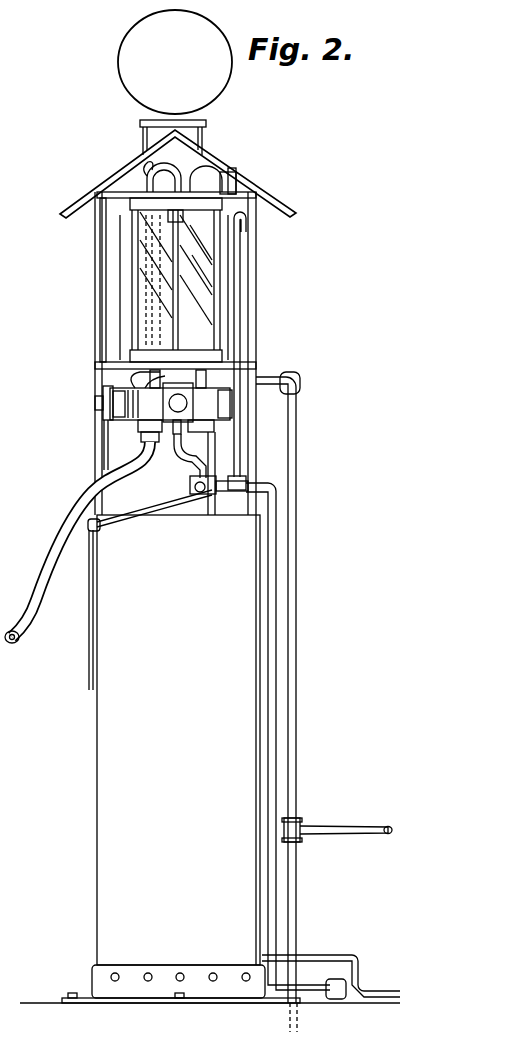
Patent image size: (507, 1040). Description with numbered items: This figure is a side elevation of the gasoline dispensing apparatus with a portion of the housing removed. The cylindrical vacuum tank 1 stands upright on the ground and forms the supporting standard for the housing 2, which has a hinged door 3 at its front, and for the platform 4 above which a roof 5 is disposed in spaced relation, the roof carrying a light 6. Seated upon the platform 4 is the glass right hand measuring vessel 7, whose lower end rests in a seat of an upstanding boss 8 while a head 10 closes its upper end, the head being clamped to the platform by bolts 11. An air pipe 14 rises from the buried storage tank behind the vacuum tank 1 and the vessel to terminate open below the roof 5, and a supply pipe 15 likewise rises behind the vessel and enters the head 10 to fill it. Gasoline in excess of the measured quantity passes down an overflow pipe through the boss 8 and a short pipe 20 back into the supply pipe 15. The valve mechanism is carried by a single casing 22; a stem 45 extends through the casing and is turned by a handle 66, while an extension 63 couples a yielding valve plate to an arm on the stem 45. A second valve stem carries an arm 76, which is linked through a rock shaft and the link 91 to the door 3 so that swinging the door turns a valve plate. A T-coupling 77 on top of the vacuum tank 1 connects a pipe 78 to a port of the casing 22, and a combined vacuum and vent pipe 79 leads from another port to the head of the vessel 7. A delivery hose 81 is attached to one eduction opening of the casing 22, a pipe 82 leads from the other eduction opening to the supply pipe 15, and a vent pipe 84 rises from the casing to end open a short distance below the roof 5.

The cylindrical vacuum tank 1 is at (210, 759).
The housing 2 is at (258, 438).
The hinged door 3 is at (88, 613).
The platform 4 is at (252, 368).
The roof 5 is at (225, 172).
The light 6 is at (175, 82).
The right hand measuring vessel 7 is at (202, 292).
The upstanding boss 8 is at (215, 352).
The head 10 is at (132, 210).
The bolts 11 is at (132, 250).
The air pipe 14 is at (297, 772).
The supply pipe 15 is at (236, 182).
The short pipe 20 is at (176, 461).
The valve casing 22 is at (125, 378).
The stem 45 is at (95, 403).
The extension 63 is at (100, 386).
The handle 66 is at (98, 441).
The arm 76 is at (228, 414).
The T-coupling 77 is at (232, 518).
The pipe 78 is at (212, 500).
The combined vacuum and vent pipe 79 is at (140, 180).
The delivery hose 81 is at (52, 523).
The pipe 82 is at (220, 473).
The vent pipe 84 is at (150, 163).
The link 91 is at (158, 502).